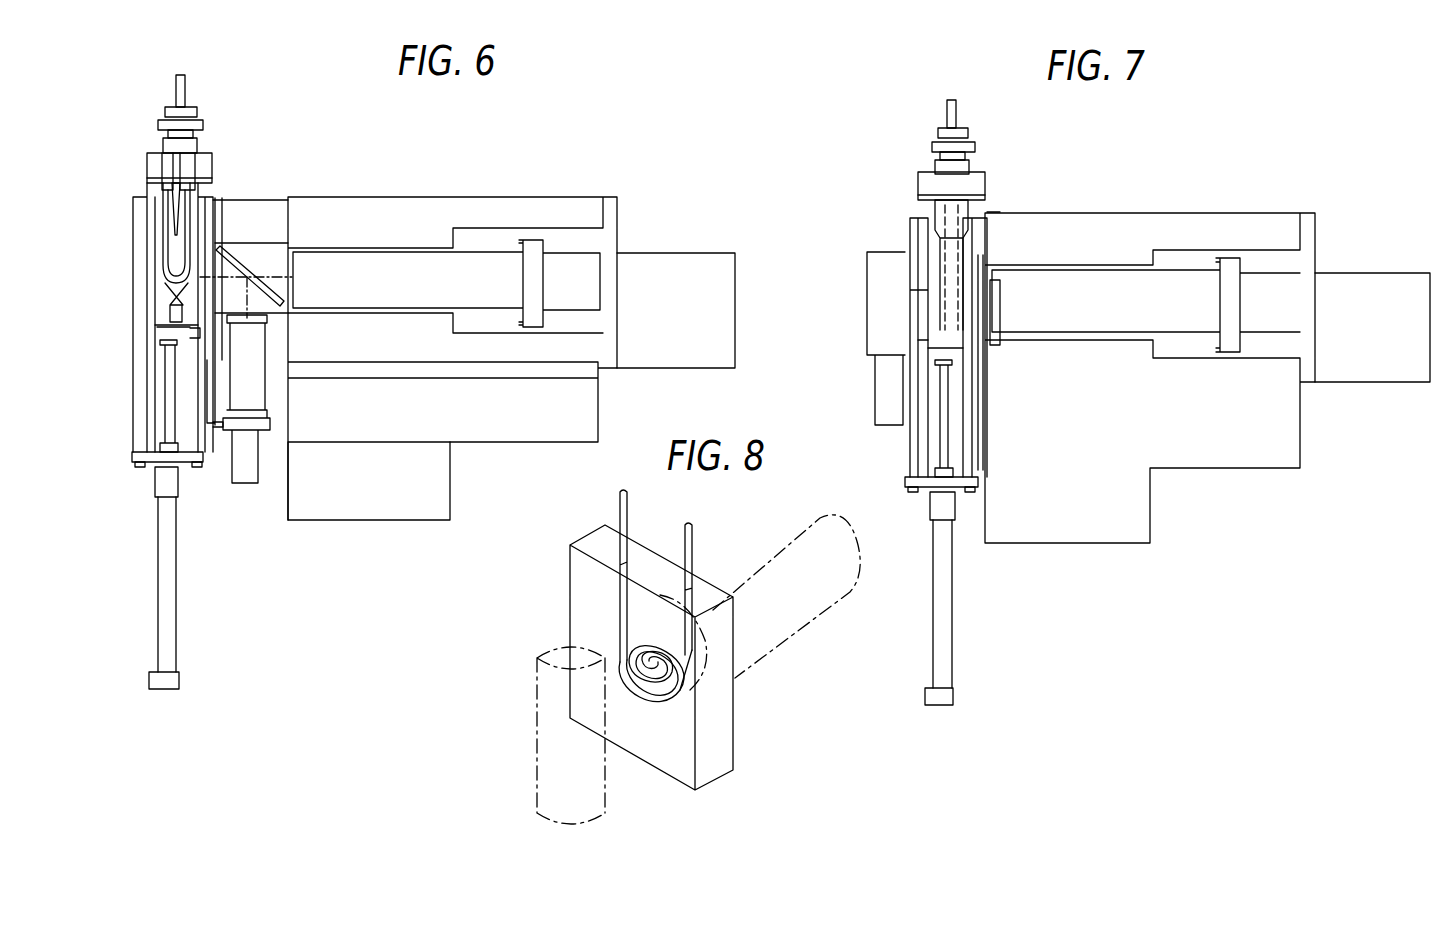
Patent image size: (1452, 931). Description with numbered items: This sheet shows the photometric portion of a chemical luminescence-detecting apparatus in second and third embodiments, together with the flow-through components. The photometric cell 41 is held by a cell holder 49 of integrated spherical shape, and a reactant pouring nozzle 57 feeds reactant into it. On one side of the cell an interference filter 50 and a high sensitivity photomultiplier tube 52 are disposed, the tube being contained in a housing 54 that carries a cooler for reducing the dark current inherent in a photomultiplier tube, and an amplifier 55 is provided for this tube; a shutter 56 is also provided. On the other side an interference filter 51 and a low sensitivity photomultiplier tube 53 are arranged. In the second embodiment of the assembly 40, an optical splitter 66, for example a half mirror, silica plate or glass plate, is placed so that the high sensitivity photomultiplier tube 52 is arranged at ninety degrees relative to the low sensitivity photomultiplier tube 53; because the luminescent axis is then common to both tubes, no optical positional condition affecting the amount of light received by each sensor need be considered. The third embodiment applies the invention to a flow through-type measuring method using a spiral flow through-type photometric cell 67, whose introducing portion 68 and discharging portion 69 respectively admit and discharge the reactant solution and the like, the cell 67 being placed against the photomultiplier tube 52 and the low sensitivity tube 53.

In FIG. 6, the dispensing head assembly 40 is at (280, 193).
In FIG. 6, the photometric cell 41 is at (160, 243).
In FIG. 6, the cell holder 49 is at (160, 285).
In FIG. 6, the interference filter 50 is at (216, 255).
In FIG. 7, the interference filter 50 is at (983, 262).
In FIG. 7, the interference filter 51 is at (917, 290).
In FIG. 6, the high sensitivity photomultiplier tube 52 is at (405, 250).
In FIG. 7, the high sensitivity photomultiplier tube 52 is at (1075, 270).
In FIG. 8, the high sensitivity photomultiplier tube 52 is at (800, 600).
In FIG. 6, the low sensitivity photomultiplier tube 53 is at (226, 383).
In FIG. 7, the low sensitivity photomultiplier tube 53 is at (877, 310).
In FIG. 8, the low sensitivity photomultiplier tube 53 is at (545, 725).
In FIG. 6, the housing 54 is at (500, 215).
In FIG. 7, the housing 54 is at (1203, 235).
In FIG. 6, the amplifier 55 is at (683, 253).
In FIG. 7, the amplifier 55 is at (1370, 273).
In FIG. 6, the shutter 56 is at (163, 335).
In FIG. 7, the shutter 56 is at (935, 350).
In FIG. 6, the reactant pouring nozzle 57 is at (168, 213).
In FIG. 6, the optical splitter 66 is at (246, 265).
In FIG. 8, the spiral flow through-type photometric cell 67 is at (570, 594).
In FIG. 8, the introducing portion 68 is at (620, 508).
In FIG. 8, the discharging portion 69 is at (692, 545).